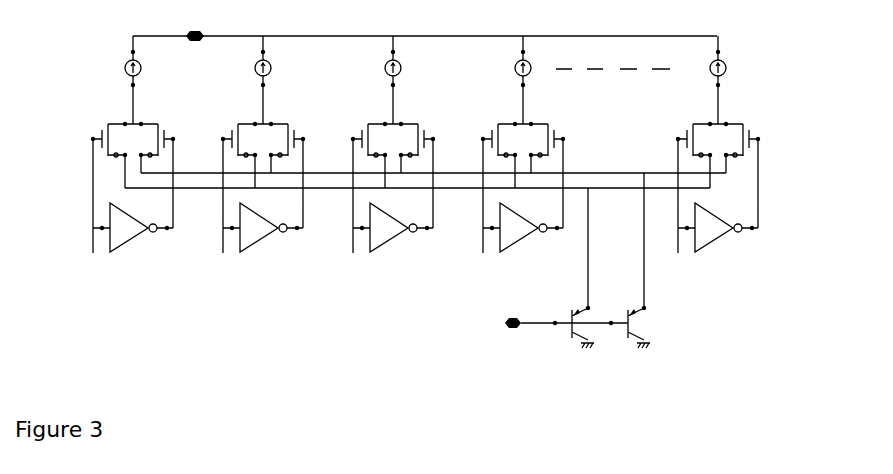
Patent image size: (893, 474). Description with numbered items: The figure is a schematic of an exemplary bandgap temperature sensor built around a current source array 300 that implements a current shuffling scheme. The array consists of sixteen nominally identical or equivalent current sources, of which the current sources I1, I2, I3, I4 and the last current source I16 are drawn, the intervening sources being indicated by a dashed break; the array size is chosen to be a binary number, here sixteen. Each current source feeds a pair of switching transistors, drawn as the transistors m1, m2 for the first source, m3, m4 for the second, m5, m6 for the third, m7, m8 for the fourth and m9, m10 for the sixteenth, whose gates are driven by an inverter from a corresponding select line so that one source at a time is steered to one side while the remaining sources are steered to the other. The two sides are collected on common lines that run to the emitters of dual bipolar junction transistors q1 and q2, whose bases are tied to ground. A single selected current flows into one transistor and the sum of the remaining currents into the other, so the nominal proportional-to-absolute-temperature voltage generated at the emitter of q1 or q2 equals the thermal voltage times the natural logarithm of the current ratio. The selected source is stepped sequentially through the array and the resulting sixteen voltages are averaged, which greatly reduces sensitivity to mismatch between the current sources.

The current source array 300 is at (347, 299).
The current source I1 is at (124, 80).
The current source I2 is at (254, 80).
The current source I3 is at (384, 80).
The current source I4 is at (514, 80).
The current source I16 is at (704, 80).
The PMOS switch transistor m1 is at (106, 155).
The PMOS switch transistor m2 is at (157, 147).
The PMOS switch transistor m3 is at (236, 155).
The PMOS switch transistor m4 is at (287, 147).
The PMOS switch transistor m5 is at (366, 155).
The PMOS switch transistor m6 is at (417, 147).
The PMOS switch transistor m7 is at (496, 155).
The PMOS switch transistor m8 is at (547, 147).
The PMOS switch transistor m9 is at (691, 155).
The PMOS switch transistor m10 is at (746, 147).
The bipolar junction transistor q1 is at (573, 327).
The bipolar junction transistor q2 is at (629, 327).